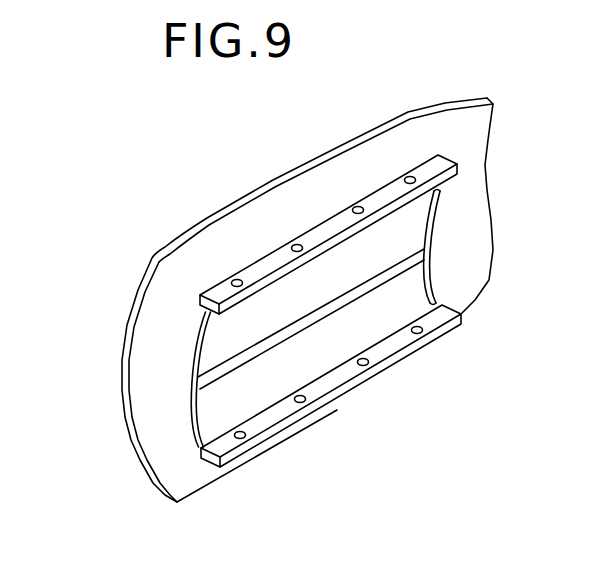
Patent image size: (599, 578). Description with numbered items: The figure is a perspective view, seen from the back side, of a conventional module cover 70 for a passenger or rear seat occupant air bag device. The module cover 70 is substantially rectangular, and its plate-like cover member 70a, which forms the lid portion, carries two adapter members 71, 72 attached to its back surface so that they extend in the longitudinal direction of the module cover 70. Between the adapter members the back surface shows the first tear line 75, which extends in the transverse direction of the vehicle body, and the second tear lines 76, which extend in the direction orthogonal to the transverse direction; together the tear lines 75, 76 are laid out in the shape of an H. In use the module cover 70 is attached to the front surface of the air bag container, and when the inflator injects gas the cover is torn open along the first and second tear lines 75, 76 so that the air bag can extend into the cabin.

The module cover 70 is at (407, 109).
The plate-like cover member 70a is at (252, 218).
The adapter member 71 is at (327, 233).
The adapter member 72 is at (340, 377).
The first tear line 75 is at (327, 305).
The second tear line 76 is at (195, 415).